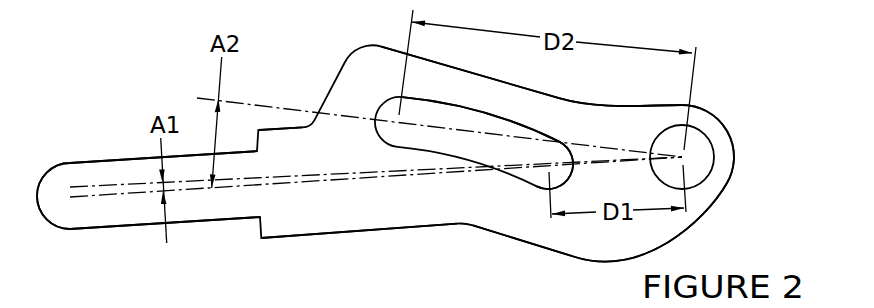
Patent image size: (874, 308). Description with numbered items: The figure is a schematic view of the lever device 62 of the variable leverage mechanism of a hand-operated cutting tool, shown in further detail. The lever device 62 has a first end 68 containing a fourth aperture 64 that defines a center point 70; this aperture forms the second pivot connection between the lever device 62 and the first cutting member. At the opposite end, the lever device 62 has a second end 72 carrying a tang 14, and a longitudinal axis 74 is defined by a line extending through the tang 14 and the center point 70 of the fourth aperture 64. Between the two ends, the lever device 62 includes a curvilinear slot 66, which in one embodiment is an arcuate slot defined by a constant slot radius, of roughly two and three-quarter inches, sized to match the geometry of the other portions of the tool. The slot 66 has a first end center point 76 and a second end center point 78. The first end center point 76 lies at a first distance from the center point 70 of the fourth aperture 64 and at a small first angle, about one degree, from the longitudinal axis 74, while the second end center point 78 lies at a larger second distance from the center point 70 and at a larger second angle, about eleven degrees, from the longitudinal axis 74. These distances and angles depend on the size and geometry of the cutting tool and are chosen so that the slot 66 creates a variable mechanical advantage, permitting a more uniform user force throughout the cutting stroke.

The tang 14 is at (100, 162).
The lever device 62 is at (622, 118).
The fourth aperture 64 is at (709, 138).
The curvilinear slot 66 is at (432, 98).
The first end 68 is at (721, 227).
The center point 70 is at (686, 160).
The second end 72 is at (216, 243).
The longitudinal axis 74 is at (290, 185).
The first end center point 76 is at (538, 172).
The second end center point 78 is at (394, 127).